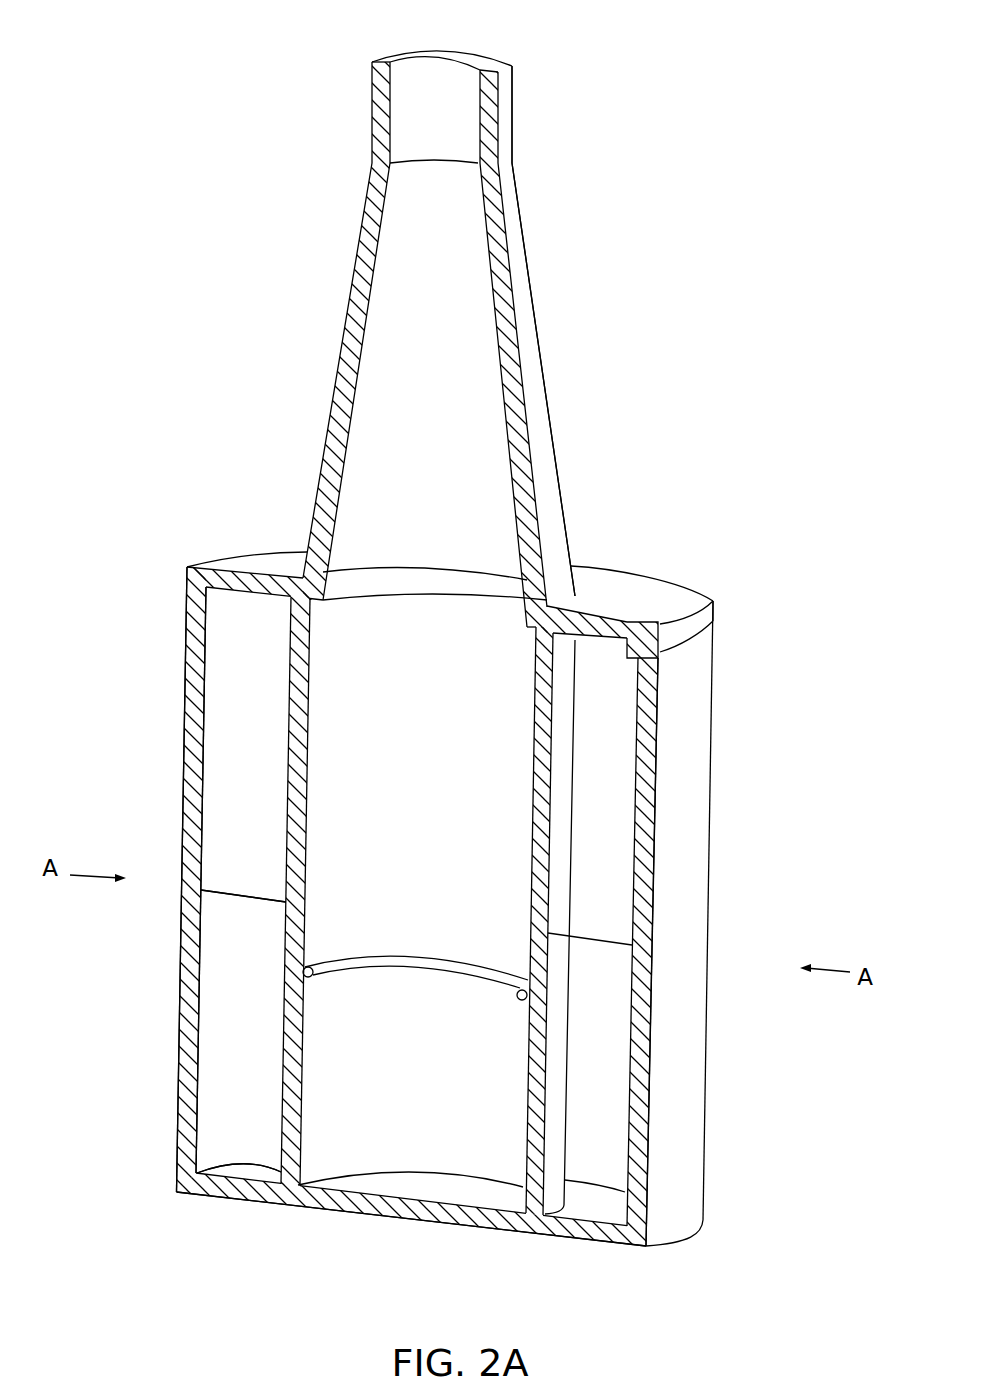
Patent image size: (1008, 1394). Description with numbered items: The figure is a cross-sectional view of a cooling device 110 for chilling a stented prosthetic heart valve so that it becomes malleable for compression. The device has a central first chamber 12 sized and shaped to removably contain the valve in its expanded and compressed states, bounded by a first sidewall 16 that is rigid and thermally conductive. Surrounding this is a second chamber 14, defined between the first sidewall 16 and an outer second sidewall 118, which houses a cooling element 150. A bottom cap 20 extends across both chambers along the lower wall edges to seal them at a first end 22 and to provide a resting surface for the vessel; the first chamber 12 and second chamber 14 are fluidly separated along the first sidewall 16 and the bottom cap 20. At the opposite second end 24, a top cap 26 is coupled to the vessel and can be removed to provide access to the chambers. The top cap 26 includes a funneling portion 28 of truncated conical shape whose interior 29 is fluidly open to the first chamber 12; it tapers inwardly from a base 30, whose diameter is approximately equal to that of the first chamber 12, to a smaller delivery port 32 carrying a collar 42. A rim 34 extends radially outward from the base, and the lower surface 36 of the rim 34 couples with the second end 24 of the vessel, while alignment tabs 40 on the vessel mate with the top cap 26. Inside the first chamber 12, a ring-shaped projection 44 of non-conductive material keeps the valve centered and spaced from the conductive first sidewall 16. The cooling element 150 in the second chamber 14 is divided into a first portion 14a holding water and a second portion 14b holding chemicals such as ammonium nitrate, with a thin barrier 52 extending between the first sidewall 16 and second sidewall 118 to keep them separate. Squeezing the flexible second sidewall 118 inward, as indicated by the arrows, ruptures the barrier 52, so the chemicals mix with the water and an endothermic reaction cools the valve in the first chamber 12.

The cooling device 110 is at (810, 305).
The first chamber 12 is at (520, 795).
The second chamber 14 is at (618, 722).
The first portion 14a is at (225, 752).
The second portion 14b is at (228, 1067).
The first sidewall 16 is at (568, 858).
The bottom cap 20 is at (433, 1216).
The first end 22 is at (305, 1218).
The second end 24 is at (176, 577).
The top cap 26 is at (585, 335).
The funneling portion 28 is at (533, 423).
The interior 29 is at (352, 447).
The base 30 is at (555, 608).
The delivery port 32 is at (440, 95).
The rim 34 is at (688, 597).
The lower surface 36 is at (233, 593).
The alignment tabs 40 is at (655, 648).
The collar 42 is at (503, 125).
The projections 44 is at (340, 967).
The barrier 52 is at (235, 895).
The second sidewall 118 is at (697, 762).
The cooling element 150 is at (240, 878).